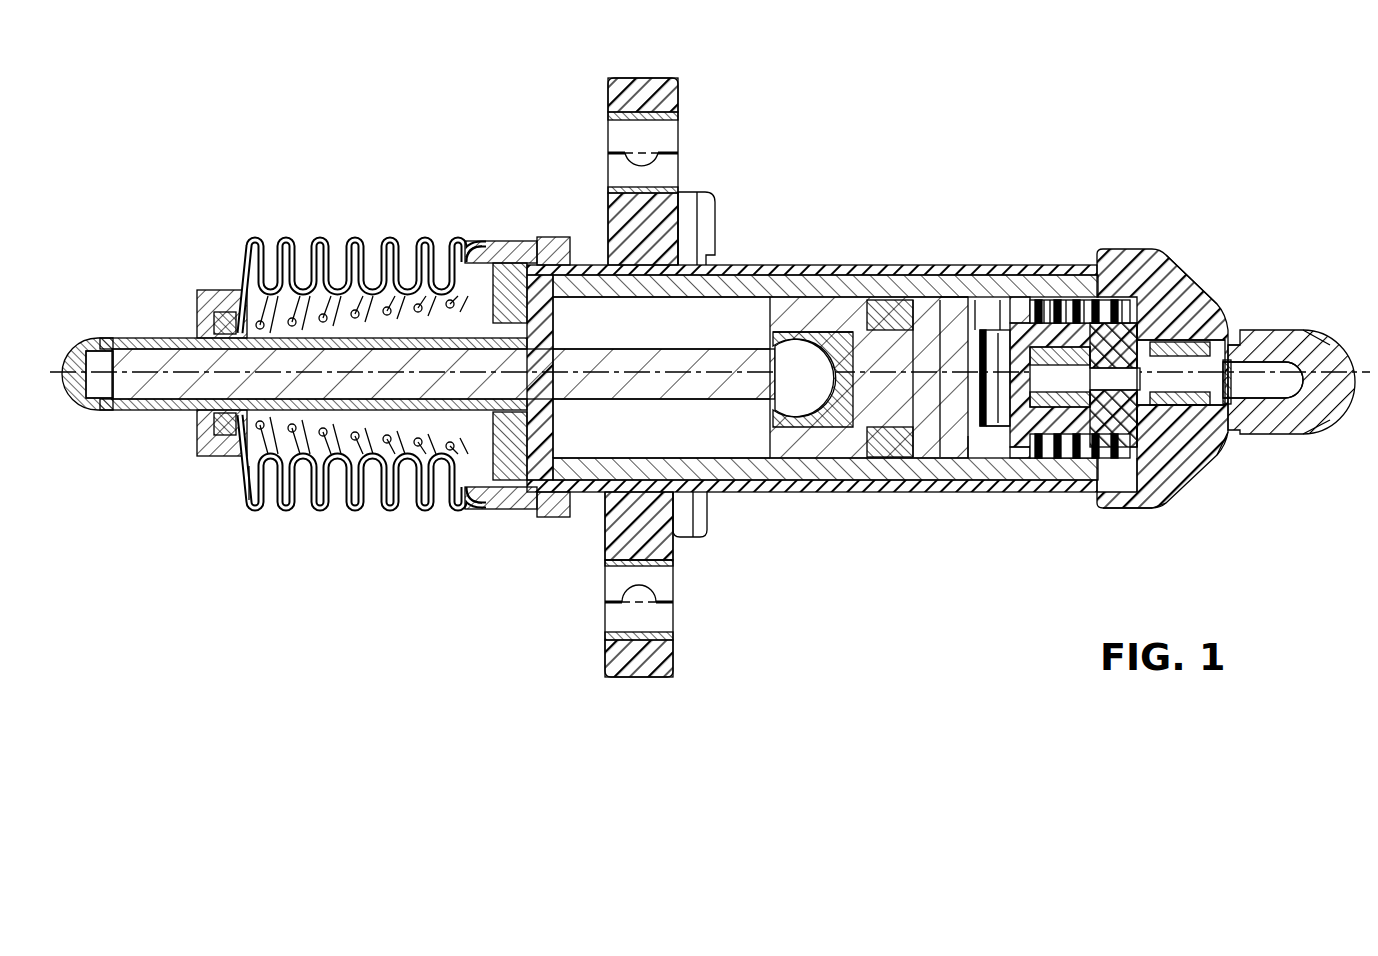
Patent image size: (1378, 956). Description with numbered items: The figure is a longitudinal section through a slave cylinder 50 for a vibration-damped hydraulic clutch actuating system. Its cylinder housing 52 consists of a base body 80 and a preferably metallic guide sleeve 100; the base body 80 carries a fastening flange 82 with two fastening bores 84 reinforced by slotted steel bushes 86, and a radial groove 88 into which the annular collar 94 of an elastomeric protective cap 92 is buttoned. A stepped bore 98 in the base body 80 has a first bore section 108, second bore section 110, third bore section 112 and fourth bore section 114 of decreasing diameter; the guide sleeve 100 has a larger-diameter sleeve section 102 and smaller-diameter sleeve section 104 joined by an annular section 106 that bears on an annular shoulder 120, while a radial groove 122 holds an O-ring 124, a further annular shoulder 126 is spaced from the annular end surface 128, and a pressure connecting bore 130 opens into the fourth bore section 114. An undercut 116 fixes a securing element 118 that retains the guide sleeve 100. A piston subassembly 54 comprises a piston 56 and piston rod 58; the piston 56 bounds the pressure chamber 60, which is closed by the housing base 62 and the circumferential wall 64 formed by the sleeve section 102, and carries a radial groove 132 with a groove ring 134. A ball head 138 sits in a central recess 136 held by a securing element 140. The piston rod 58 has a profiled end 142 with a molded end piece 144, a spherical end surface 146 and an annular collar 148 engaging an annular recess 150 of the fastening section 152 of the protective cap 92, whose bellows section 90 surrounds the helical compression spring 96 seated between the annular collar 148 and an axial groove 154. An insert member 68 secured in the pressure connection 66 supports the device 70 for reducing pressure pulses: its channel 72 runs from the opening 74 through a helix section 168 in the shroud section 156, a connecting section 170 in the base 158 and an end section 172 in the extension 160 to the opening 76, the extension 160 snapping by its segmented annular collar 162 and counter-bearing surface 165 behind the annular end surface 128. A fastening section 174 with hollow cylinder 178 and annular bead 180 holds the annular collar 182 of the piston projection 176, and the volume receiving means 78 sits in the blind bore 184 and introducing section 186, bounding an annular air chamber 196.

The slave cylinder 50 is at (1116, 148).
The cylinder housing 52 is at (790, 265).
The piston subassembly 54 is at (740, 492).
The piston 56 is at (792, 462).
The piston rod 58 is at (600, 405).
The pressure chamber 60 is at (972, 440).
The housing base 62 is at (1126, 508).
The circumferential wall 64 is at (650, 450).
The pressure connection 66 is at (1298, 330).
The insert member 68 is at (1044, 300).
The device for reducing pressure pulses 70 is at (975, 300).
The channel 72 is at (1066, 300).
The opening at the pressure chamber side 74 is at (1000, 300).
The opening at the pressure connection side 76 is at (1213, 342).
The volume receiving means 78 is at (1108, 300).
The base body 80 is at (598, 540).
The fastening flange 82 is at (607, 675).
The fastening bores 84 is at (614, 133).
The slotted steel bushes 86 is at (617, 177).
The radial groove 88 is at (540, 517).
The bellows section 90 is at (300, 507).
The protective cap 92 is at (345, 507).
The annular collar 94 is at (553, 237).
The helical compression spring 96 is at (298, 243).
The stepped bore 98 is at (712, 252).
The guide sleeve 100 is at (565, 331).
The larger-diameter sleeve section 102 is at (606, 377).
The smaller-diameter sleeve section 104 is at (1198, 312).
The annular section 106 is at (1215, 300).
The first bore section 108 is at (500, 241).
The second bore section 110 is at (668, 297).
The third bore section 112 is at (1195, 470).
The fourth bore section 114 is at (1230, 420).
The undercut 116 is at (470, 244).
The securing element 118 is at (455, 505).
The annular shoulder 120 is at (1076, 458).
The radial groove 122 is at (1110, 500).
The O-ring 124 is at (1165, 500).
The further annular shoulder 126 is at (1237, 330).
The annular end surface 128 is at (1270, 400).
The pressure connecting bore 130 is at (1322, 422).
The radial groove 132 is at (882, 297).
The groove ring 134 is at (906, 297).
The central recess 136 is at (805, 432).
The ball head 138 is at (765, 410).
The securing element 140 is at (773, 345).
The profiled end 142 is at (135, 338).
The end piece 144 is at (110, 405).
The spherical end surface 146 is at (70, 350).
The annular collar 148 is at (200, 440).
The annular recess 150 is at (212, 290).
The fastening section 152 is at (216, 320).
The axial groove 154 is at (495, 510).
The shroud section 156 is at (1018, 440).
The base 158 is at (1045, 460).
The extension 160 is at (1142, 300).
The segmented annular collar 162 is at (1235, 442).
The counter-bearing surface 165 is at (1328, 350).
The helix section 168 is at (1050, 300).
The connecting section 170 is at (1122, 300).
The end section 172 is at (1205, 275).
The fastening section 174 is at (1005, 460).
The projection 176 is at (935, 458).
The hollow cylinder 178 is at (950, 265).
The annular bead 180 is at (960, 460).
The annular collar 182 is at (880, 460).
The cylindrical blind bore 184 is at (972, 360).
The introducing section 186 is at (966, 400).
The annular air chamber 196 is at (1084, 300).